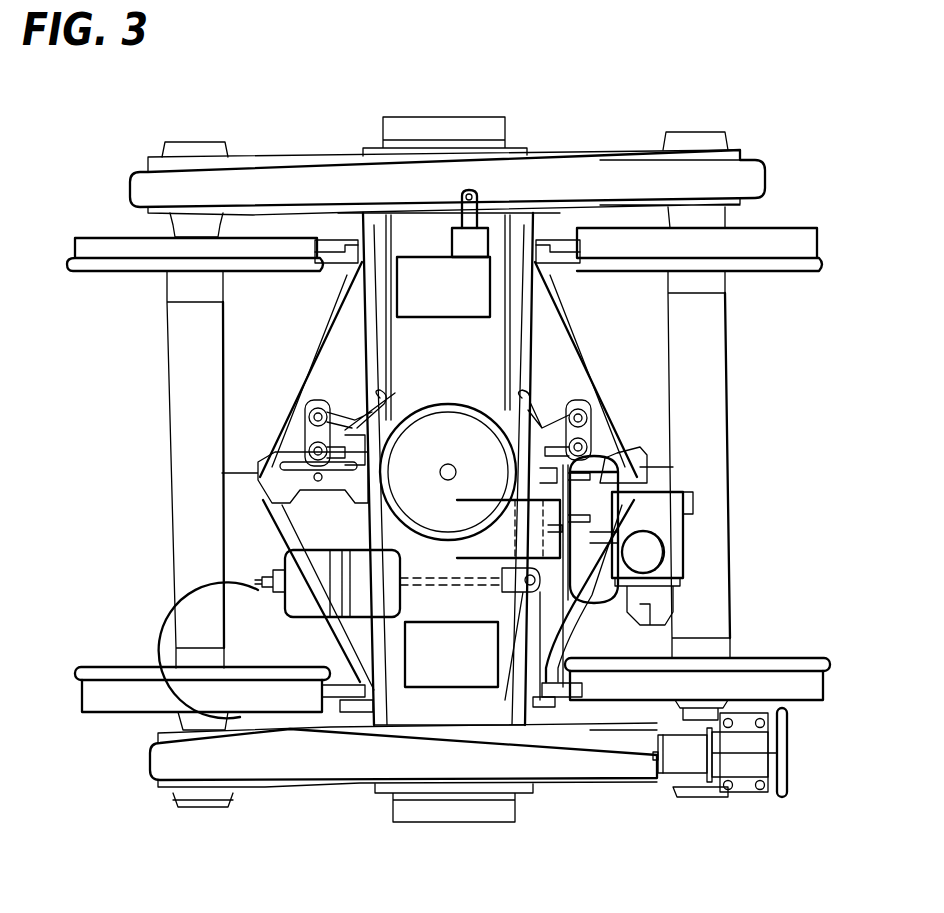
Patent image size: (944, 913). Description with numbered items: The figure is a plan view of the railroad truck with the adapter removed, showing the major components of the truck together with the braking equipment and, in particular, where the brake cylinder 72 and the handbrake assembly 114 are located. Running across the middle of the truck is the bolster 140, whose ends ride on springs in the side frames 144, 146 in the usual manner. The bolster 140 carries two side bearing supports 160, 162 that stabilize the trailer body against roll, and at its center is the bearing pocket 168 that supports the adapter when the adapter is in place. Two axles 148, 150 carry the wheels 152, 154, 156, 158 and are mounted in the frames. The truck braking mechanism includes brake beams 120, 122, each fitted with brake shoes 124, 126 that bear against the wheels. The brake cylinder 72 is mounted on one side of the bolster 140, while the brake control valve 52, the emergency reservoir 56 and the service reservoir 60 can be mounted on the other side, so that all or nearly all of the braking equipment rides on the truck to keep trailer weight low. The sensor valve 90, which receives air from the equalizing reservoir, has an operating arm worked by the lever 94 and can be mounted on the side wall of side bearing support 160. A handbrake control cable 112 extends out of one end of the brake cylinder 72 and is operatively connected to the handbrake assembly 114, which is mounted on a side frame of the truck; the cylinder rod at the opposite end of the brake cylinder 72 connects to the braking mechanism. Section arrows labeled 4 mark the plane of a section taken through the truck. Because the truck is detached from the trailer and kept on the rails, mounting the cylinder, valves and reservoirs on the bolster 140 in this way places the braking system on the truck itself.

The side frame 146 is at (305, 178).
The side frame 144 is at (327, 775).
The wheel 154 is at (90, 252).
The wheel 158 is at (782, 236).
The wheel 152 is at (105, 708).
The wheel 156 is at (803, 690).
The axle 148 is at (190, 342).
The axle 150 is at (712, 380).
The brake shoe 126 is at (330, 262).
The brake shoe 124 is at (575, 266).
The brake beam 122 is at (310, 351).
The brake beam 120 is at (596, 355).
The bolster 140 is at (460, 354).
The side bearing support 160 is at (460, 298).
The side bearing support 162 is at (462, 668).
The bearing pocket 168 is at (462, 449).
The S-1 sensor valve 90 is at (452, 243).
The lever 94 is at (478, 203).
The service reservoir 60 is at (630, 486).
The emergency reservoir 56 is at (607, 585).
The brake control valve 52 is at (665, 528).
The brake cylinder 72 is at (308, 622).
The handbrake control cable 112 is at (445, 738).
The handbrake assembly 114 is at (752, 790).
The section line 4- 4 is at (237, 475).